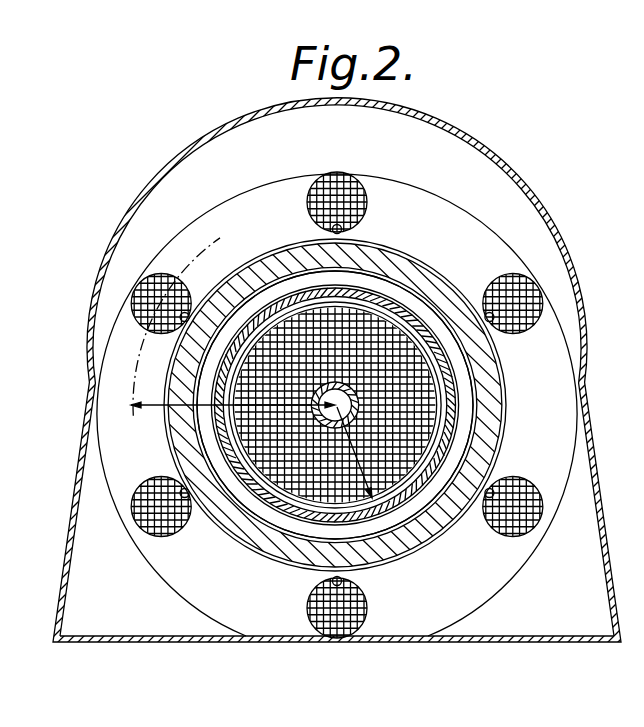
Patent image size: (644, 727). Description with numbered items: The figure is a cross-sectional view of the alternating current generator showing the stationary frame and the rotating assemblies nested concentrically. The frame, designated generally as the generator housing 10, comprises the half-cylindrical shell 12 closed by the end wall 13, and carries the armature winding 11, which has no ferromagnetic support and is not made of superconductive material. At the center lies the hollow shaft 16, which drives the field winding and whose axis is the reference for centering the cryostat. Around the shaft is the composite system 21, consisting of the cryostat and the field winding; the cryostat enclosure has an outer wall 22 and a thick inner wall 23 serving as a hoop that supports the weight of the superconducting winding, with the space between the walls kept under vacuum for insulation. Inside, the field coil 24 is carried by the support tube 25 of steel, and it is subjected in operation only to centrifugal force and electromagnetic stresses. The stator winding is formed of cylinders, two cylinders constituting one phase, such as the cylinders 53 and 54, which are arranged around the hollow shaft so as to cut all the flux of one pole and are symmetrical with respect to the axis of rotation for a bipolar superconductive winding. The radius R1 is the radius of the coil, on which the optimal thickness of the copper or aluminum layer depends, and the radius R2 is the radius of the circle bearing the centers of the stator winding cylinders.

The housing 10 is at (322, 363).
The armature winding 11 is at (338, 205).
The half-cylindrical shell 12 is at (206, 204).
The end wall 13 is at (265, 640).
The hollow shaft 16 is at (322, 405).
The composite system 21 is at (334, 442).
The outer wall 22 is at (335, 381).
The inner wall 23 is at (334, 375).
The field winding 24 is at (385, 404).
The support tube 25 is at (424, 385).
The stator winding cylinder 53 is at (540, 310).
The stator winding cylinder 54 is at (148, 522).
The coil radius R1 is at (343, 421).
The radius of circle bearing stator cylinder centers R2 is at (207, 404).